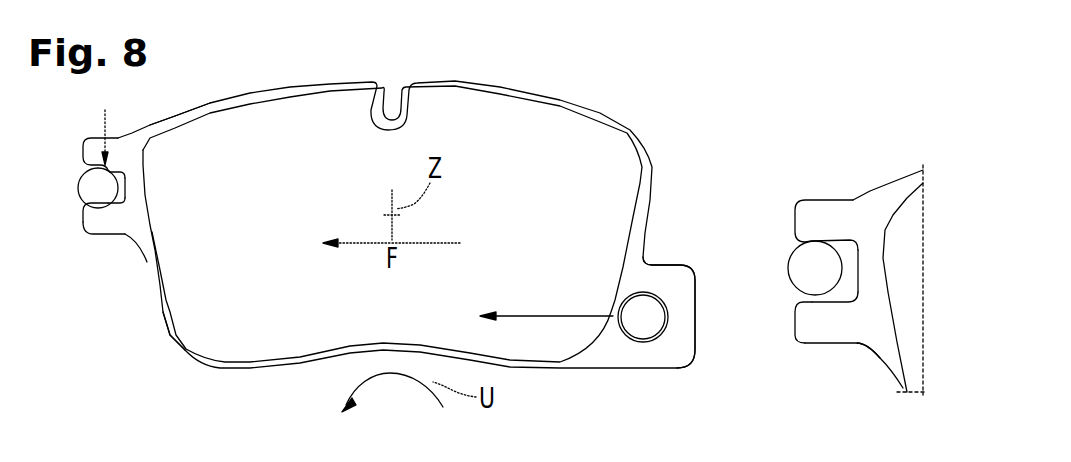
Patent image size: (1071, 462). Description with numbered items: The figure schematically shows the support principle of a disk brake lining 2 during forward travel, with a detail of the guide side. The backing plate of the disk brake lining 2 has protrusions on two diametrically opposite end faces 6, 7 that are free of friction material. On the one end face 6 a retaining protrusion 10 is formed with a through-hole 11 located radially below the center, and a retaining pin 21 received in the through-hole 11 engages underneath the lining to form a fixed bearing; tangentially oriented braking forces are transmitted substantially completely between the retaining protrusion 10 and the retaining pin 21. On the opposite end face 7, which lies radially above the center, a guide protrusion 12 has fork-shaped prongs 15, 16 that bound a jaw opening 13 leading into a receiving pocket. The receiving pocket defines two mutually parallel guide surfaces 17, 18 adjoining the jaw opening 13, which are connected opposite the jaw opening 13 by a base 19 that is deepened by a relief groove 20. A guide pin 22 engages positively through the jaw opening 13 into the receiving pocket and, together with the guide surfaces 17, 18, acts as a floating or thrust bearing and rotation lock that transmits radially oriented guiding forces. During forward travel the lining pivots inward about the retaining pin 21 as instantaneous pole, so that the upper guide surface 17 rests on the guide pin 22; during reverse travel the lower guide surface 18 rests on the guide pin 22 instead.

The disk brake lining 2 is at (598, 104).
The end face 6 is at (651, 202).
The end face 7 is at (163, 298).
The retaining protrusion 10 is at (650, 266).
The through-hole 11 is at (660, 292).
The guide protrusion 12 is at (143, 142).
The jaw opening 13 is at (84, 204).
The prong 15 is at (83, 154).
The prong 16 is at (93, 228).
The upper guide surface 17 is at (108, 167).
The lower guide surface 18 is at (138, 238).
The base 19 is at (126, 179).
The relief groove 20 is at (127, 200).
The retaining pin 21 is at (658, 322).
The guide pin 22 is at (79, 184).